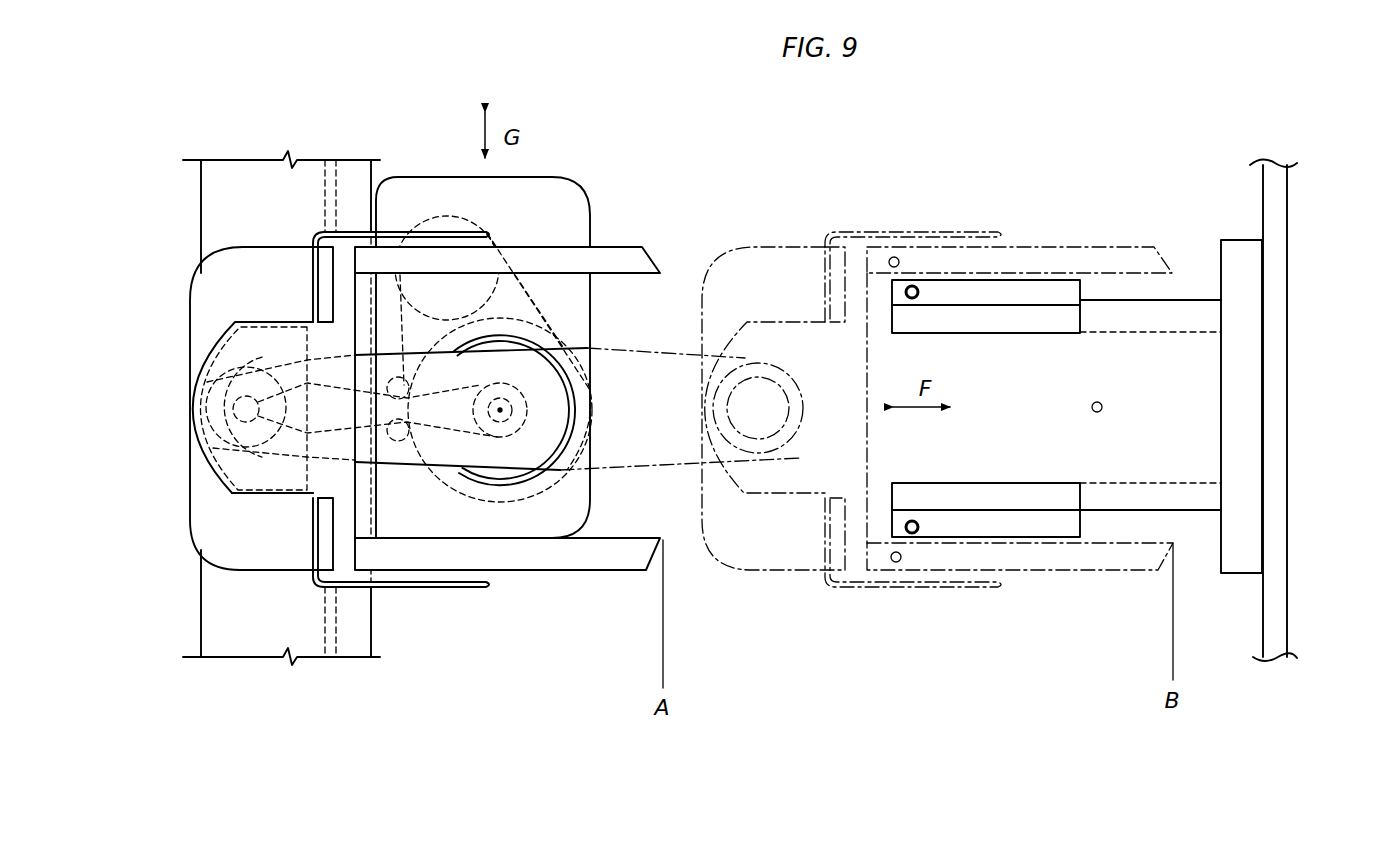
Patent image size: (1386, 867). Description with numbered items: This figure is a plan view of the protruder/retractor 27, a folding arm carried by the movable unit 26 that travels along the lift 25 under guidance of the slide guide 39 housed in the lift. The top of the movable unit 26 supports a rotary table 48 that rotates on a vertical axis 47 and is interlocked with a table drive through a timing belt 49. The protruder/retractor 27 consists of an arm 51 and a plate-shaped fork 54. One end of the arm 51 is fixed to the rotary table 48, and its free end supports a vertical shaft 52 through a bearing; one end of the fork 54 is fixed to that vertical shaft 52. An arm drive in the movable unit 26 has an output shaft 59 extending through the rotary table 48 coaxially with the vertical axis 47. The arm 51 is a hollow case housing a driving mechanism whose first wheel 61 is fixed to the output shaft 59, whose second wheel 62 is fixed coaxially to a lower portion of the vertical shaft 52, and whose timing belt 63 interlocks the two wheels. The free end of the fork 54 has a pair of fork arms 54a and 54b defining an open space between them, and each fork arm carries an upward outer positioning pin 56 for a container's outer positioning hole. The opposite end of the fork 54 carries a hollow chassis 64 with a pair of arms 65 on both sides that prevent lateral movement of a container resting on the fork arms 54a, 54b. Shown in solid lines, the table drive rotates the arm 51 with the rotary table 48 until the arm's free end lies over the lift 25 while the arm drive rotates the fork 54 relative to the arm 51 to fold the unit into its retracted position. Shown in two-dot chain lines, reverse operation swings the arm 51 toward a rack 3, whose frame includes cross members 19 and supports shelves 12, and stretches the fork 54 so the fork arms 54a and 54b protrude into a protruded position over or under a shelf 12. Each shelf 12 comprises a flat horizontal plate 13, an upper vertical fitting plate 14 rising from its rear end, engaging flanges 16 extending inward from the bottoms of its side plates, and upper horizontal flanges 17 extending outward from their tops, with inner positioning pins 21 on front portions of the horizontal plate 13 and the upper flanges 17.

The rack 3 is at (1247, 236).
The shelf 12 is at (1190, 297).
The flat horizontal plate 13 is at (1183, 357).
The upper vertical fitting plate 14 is at (1235, 575).
The horizontal engaging flange 16 is at (1037, 322).
The upper horizontal flange 17 is at (1008, 290).
The cross member 19 is at (1277, 212).
The inner positioning pin 21 is at (912, 286).
The lift 25 is at (240, 628).
The movable unit 26 is at (533, 178).
The protruder/retractor 27 is at (497, 480).
The slide guide 39 is at (337, 630).
The vertical axis 47 is at (500, 410).
The rotary table 48 is at (577, 423).
The timing belt 49 is at (540, 299).
The arm 51 is at (397, 470).
The vertical shaft 52 is at (195, 420).
The fork 54 is at (600, 247).
The fork arm 54a is at (568, 557).
The fork arm 54b is at (633, 257).
The outer positioning pin 56 is at (383, 255).
The output shaft 59 is at (567, 488).
The first wheel 61 is at (568, 480).
The second wheel 62 is at (193, 400).
The timing belt 63 is at (227, 490).
The chassis 64 is at (233, 323).
The arm 65 is at (446, 232).